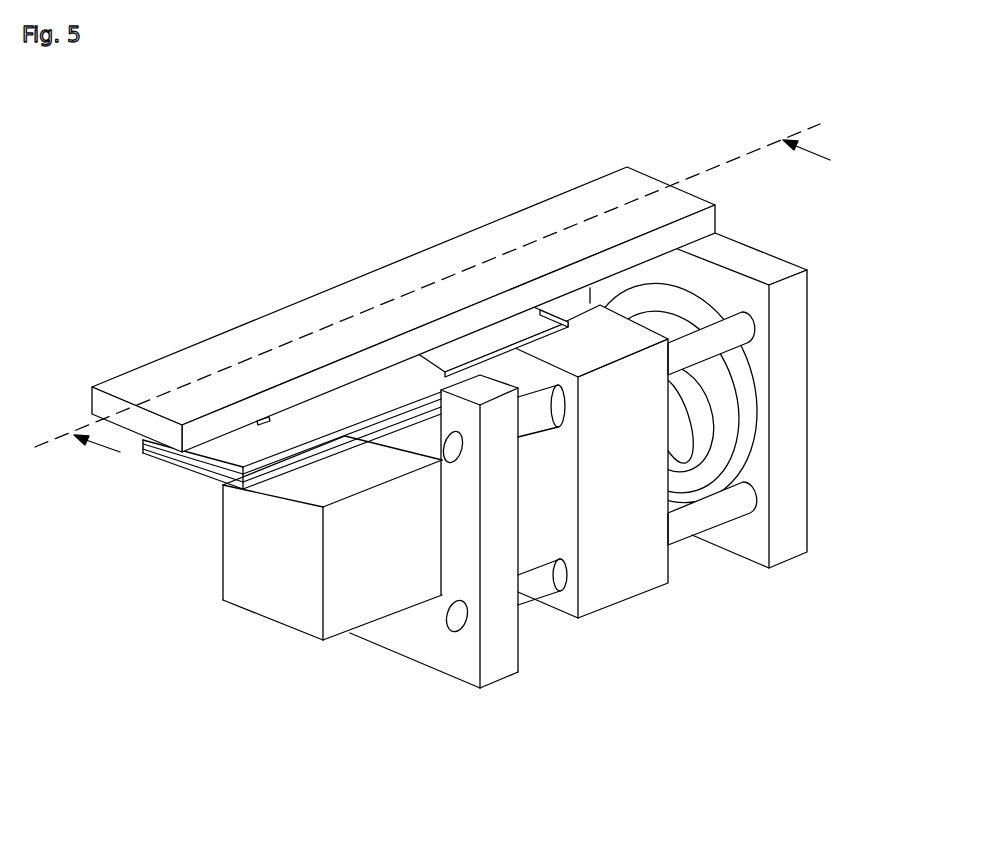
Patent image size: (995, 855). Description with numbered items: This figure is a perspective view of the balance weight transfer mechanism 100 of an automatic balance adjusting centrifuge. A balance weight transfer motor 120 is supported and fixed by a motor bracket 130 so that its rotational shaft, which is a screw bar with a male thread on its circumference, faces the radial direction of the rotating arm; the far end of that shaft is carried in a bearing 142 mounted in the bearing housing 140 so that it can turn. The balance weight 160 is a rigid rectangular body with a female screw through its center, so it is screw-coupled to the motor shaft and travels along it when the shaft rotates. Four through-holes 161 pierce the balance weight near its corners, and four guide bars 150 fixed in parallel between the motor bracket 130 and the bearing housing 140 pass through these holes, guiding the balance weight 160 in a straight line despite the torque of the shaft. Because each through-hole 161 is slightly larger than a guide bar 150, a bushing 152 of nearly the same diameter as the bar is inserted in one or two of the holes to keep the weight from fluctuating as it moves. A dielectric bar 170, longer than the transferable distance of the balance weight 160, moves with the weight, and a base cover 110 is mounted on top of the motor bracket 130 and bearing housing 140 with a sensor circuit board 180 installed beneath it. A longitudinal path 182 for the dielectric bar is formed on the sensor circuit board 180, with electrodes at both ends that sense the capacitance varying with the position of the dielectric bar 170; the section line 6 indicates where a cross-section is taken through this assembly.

The balance weight transfer mechanism 100 is at (503, 797).
The base cover 110 is at (244, 345).
The balance weight transfer motor 120 is at (260, 594).
The motor bracket 130 is at (500, 672).
The bearing housing 140 is at (804, 463).
The bearing 142 is at (754, 402).
The guide bar 150 is at (745, 316).
The bushing 152 is at (553, 393).
The balance weight 160 is at (617, 590).
The through-hole 161 is at (560, 595).
The dielectric bar 170 is at (468, 347).
The sensor circuit board 180 is at (213, 478).
The path for the dielectric bar 182 is at (180, 463).
The section line 6 is at (443, 296).